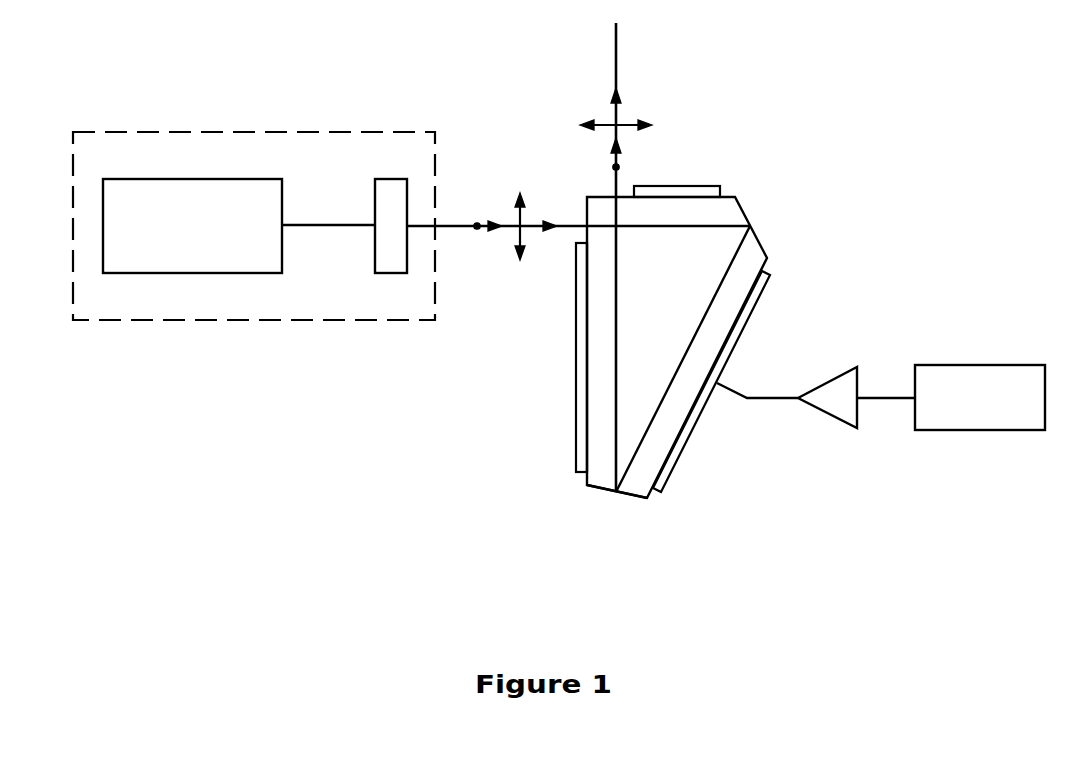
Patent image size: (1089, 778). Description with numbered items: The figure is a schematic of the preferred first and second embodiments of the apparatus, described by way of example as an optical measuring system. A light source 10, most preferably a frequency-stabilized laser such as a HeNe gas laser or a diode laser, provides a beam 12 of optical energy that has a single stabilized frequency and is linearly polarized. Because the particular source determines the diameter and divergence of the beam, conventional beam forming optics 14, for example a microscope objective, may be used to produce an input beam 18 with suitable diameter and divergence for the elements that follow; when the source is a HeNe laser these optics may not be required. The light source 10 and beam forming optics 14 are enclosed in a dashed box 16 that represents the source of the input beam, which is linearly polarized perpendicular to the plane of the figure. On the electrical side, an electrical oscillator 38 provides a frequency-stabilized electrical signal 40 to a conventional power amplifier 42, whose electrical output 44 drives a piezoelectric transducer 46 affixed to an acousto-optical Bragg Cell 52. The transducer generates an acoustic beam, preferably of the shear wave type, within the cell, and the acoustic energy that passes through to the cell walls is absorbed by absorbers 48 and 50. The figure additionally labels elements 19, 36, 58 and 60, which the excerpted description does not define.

The light source 10 is at (173, 178).
The beam 12 is at (337, 225).
The beam forming optics 14 is at (400, 178).
The dashed box 16 is at (117, 130).
The input beam 18 is at (463, 223).
The polarization direction 19 is at (463, 223).
The output beam 36 is at (617, 70).
The electrical oscillator 38 is at (977, 363).
The electrical signal 40 is at (895, 398).
The power amplifier 42 is at (827, 382).
The electrical output 44 is at (762, 398).
The piezoelectric transducer 46 is at (673, 468).
The absorber 48 is at (675, 185).
The absorber 50 is at (577, 357).
The acousto-optical Bragg Cell 52 is at (587, 293).
The electro-optic prism 58 is at (740, 205).
The bottom face 60 is at (600, 488).